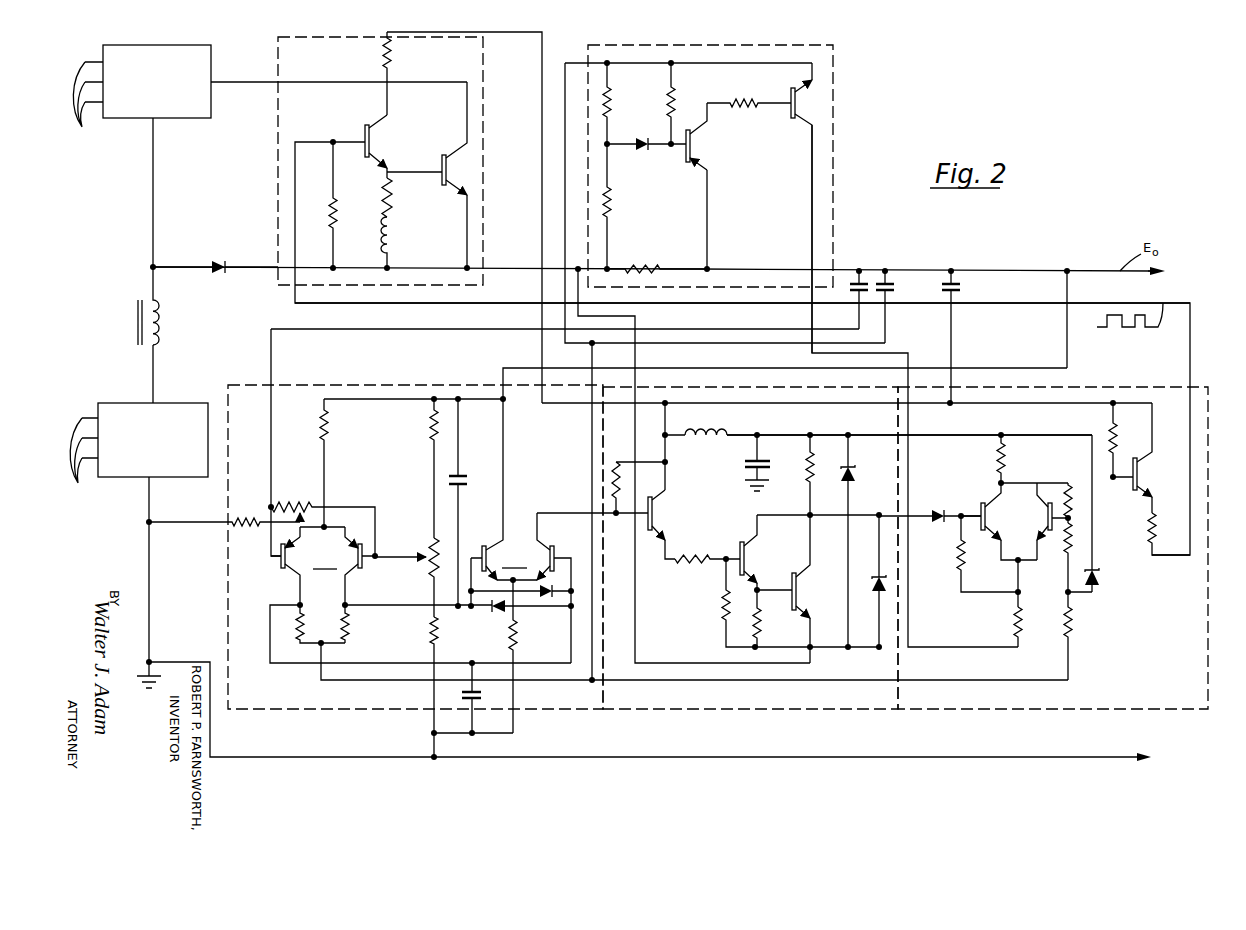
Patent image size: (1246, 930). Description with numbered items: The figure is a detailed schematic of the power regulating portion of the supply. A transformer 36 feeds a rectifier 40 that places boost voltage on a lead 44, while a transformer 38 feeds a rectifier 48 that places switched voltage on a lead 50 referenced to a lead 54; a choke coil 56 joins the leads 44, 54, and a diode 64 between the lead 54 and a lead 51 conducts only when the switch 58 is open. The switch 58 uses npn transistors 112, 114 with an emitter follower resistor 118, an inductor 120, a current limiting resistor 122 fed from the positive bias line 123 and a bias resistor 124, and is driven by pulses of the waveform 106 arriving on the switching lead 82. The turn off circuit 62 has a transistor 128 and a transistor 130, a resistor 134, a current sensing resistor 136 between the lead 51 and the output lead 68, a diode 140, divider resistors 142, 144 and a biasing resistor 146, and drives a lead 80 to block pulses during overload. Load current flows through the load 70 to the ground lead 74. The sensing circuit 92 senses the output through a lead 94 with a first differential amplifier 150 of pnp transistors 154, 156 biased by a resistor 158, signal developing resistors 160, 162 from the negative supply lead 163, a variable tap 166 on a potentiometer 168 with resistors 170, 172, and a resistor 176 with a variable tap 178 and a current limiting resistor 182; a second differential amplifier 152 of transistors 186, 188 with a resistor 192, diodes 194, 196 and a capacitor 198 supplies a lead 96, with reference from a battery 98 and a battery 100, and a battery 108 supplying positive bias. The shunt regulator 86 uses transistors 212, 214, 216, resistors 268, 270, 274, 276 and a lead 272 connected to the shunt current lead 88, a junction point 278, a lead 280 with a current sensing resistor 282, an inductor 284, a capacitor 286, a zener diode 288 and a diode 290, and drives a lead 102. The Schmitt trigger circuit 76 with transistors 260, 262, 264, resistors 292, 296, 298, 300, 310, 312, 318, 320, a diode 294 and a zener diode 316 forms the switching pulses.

The three phase transformer 36 is at (101, 471).
The transformer 38 is at (101, 113).
The rectifier 40 is at (168, 472).
The lead 44 is at (153, 375).
The rectifier 48 is at (195, 52).
The lead 50 is at (215, 82).
The lead 51 is at (502, 268).
The lead 54 is at (153, 222).
The choke coil 56 is at (158, 330).
The switch 58 is at (380, 153).
The turn off circuit 62 is at (710, 157).
The diode 64 is at (222, 260).
The output lead 68 is at (1038, 271).
The load 70 is at (1197, 515).
The ground lead 74 is at (675, 757).
The Schmitt trigger circuit 76 is at (1053, 548).
The lead 80 is at (811, 235).
The switching lead 82 is at (415, 303).
The shunt regulator 86 is at (878, 388).
The shunt current lead 88 is at (635, 642).
The sensing circuit 92 is at (415, 539).
The lead 94 is at (660, 368).
The lead 96 is at (600, 513).
The minus 6 volt battery 98 is at (868, 283).
The minus 19 volt battery 100 is at (893, 283).
The lead 102 is at (912, 516).
The waveform 106 is at (1145, 328).
The plus 10 volt battery 108 is at (960, 283).
The npn transistor 112 is at (366, 125).
The npn transistor 114 is at (444, 154).
The emitter follower resistor 118 is at (392, 195).
The inductor 120 is at (392, 248).
The current limiting resistor 122 is at (392, 62).
The plus 10 volt bias line 123 is at (805, 404).
The bias resistor 124 is at (336, 200).
The npn transistor 128 is at (790, 112).
The pnp transistor 130 is at (692, 147).
The current limiting resistor 134 is at (746, 100).
The current sensing resistor 136 is at (652, 266).
The diode 140 is at (643, 152).
The resistor 142 is at (612, 96).
The resistor 144 is at (612, 206).
The biasing resistor 146 is at (676, 96).
The first differential amplifier 150 is at (327, 561).
The second differential amplifier 152 is at (517, 567).
The pnp transistor 154 is at (282, 570).
The pnp transistor 156 is at (369, 533).
The resistor 158 is at (321, 418).
The signal developing resistor 160 is at (304, 616).
The signal developing resistor 162 is at (350, 633).
The minus 19 volt lead 163 is at (730, 681).
The variable tap 166 is at (411, 550).
The potentiometer 168 is at (425, 568).
The resistor 170 is at (430, 426).
The resistor 172 is at (438, 638).
The resistor 176 is at (290, 503).
The variable tap 178 is at (306, 511).
The current limiting resistor 182 is at (256, 518).
The npn transistor 186 is at (485, 545).
The npn transistor 188 is at (555, 545).
The resistor 192 is at (518, 640).
The diode 194 is at (498, 612).
The diode 196 is at (548, 597).
The capacitor 198 is at (460, 472).
The pnp transistor 212 is at (645, 535).
The npn transistor 214 is at (740, 548).
The npn transistor 216 is at (794, 573).
The npn transistor 260 is at (992, 520).
The npn transistor 262 is at (1050, 533).
The pnp transistor 264 is at (1133, 484).
The biasing resistor 268 is at (610, 490).
The current limiting resistor 270 is at (690, 565).
The lead 272 is at (795, 647).
The resistor 274 is at (760, 612).
The biasing resistor 276 is at (722, 603).
The junction point 278 is at (812, 518).
The lead 280 is at (828, 435).
The current sensing resistor 282 is at (812, 481).
The inductor 284 is at (693, 440).
The capacitor 286 is at (752, 468).
The zener diode 288 is at (853, 465).
The diode 290 is at (879, 575).
The resistor 292 is at (1006, 466).
The diode 294 is at (938, 524).
The resistor 296 is at (1012, 625).
The biasing resistor 298 is at (966, 562).
The resistor 300 is at (1088, 470).
The resistor 310 is at (1076, 545).
The resistor 312 is at (1078, 620).
The zener diode 316 is at (1098, 566).
The current limiting resistor 318 is at (1148, 529).
The biasing resistor 320 is at (1108, 432).